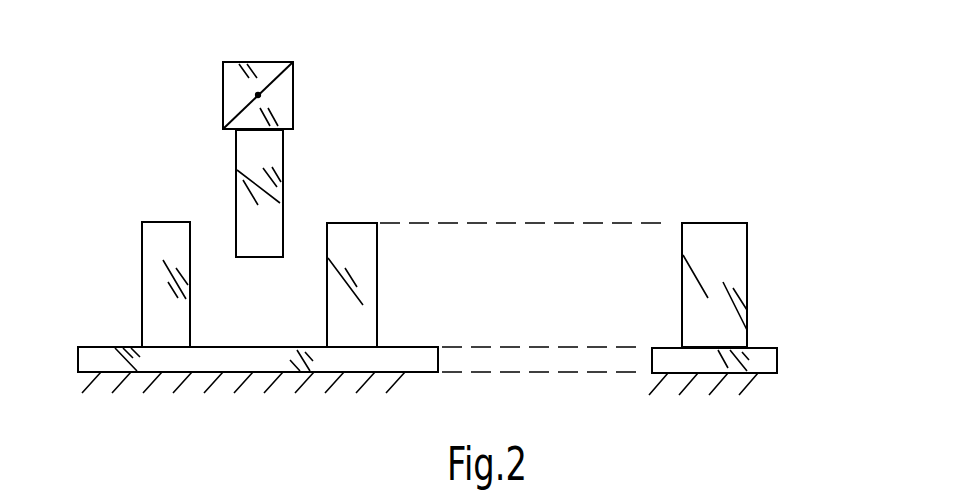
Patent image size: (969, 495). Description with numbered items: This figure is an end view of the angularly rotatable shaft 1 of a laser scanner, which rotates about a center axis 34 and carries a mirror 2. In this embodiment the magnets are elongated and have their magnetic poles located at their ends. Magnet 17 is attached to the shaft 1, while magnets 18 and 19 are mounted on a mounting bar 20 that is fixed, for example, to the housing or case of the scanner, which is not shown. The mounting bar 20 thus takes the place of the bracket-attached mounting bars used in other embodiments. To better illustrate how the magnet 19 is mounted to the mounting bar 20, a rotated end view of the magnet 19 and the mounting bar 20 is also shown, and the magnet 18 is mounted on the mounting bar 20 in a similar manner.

The angularly rotatable shaft 1 is at (267, 61).
The mirror 2 is at (243, 92).
The center axis 34 is at (263, 93).
The magnet 17 is at (283, 173).
The magnet 18 is at (142, 278).
The magnet 19 is at (377, 263).
The mounting bar 20 is at (410, 362).